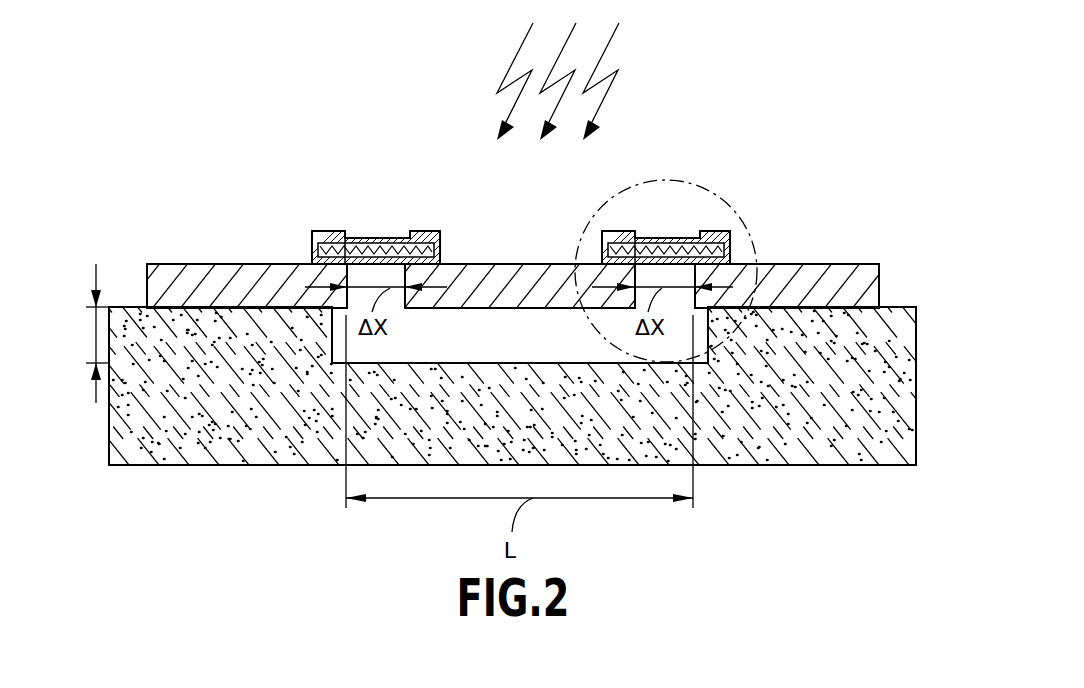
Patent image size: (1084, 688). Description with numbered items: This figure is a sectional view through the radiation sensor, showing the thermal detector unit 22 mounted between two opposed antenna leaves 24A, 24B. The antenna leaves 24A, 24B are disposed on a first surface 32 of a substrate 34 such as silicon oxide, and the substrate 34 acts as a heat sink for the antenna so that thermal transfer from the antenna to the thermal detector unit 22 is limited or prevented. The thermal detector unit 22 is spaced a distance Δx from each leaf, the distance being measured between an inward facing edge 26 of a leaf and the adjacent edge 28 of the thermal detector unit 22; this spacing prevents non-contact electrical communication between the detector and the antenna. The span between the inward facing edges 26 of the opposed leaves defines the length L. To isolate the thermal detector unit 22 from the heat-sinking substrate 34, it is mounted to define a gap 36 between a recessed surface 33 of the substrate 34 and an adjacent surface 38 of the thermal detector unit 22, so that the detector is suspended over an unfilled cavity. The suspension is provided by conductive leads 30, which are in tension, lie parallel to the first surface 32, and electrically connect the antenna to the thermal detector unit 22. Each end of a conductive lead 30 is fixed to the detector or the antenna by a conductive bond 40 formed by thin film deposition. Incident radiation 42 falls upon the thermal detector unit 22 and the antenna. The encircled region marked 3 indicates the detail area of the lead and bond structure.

The detail region of resistor structure (FIG. 3) 3 is at (724, 190).
The thermal detector unit 22 is at (557, 282).
The antenna leaf 24A is at (860, 273).
The antenna leaf 24B is at (190, 283).
The inward facing edge 26 is at (700, 277).
The edge of the thermal detector unit 28 is at (405, 287).
The conductive lead 30 is at (385, 238).
The first surface 32 is at (904, 307).
The recessed surface 33 is at (490, 360).
The substrate 34 is at (917, 373).
The gap 36 is at (96, 335).
The adjacent surface of the thermal detector unit 38 is at (587, 310).
The conductive bond 40 is at (318, 231).
The incident radiation 42 is at (612, 38).